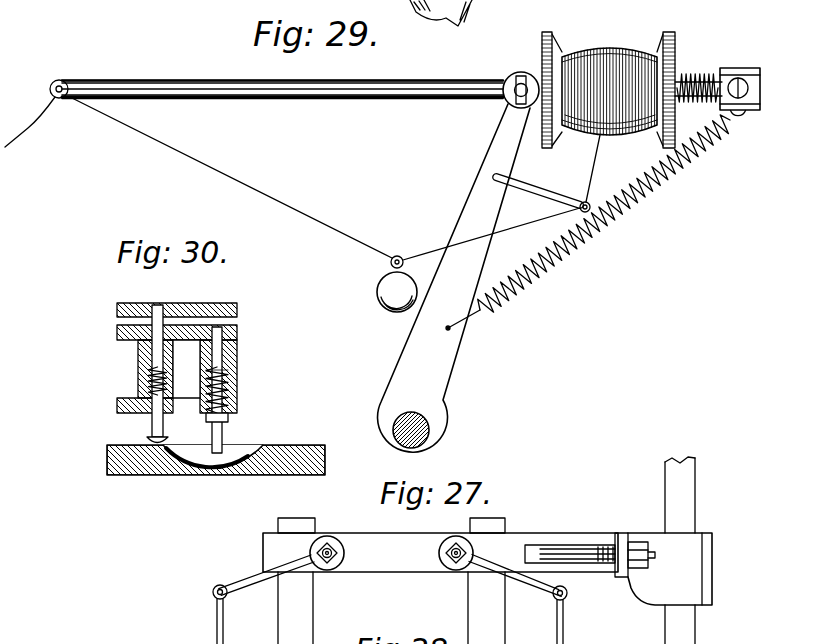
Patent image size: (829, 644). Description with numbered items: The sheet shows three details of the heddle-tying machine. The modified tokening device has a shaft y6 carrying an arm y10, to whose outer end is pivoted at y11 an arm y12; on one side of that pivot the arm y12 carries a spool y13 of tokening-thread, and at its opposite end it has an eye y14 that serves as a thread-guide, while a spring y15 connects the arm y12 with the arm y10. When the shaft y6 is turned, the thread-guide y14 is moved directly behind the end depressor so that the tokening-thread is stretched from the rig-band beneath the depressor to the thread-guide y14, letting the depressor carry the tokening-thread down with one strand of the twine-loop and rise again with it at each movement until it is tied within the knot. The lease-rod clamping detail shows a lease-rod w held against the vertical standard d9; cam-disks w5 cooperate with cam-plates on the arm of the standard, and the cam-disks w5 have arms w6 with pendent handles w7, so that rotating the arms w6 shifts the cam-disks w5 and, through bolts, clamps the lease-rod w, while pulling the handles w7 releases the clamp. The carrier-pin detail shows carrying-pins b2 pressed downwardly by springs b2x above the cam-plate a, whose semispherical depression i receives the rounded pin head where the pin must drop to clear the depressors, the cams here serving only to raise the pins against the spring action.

In FIG. 29, the shaft y6 is at (420, 427).
In FIG. 29, the arm y10 is at (453, 344).
In FIG. 29, the pivot y11 is at (510, 99).
In FIG. 29, the arm y12 is at (402, 65).
In FIG. 29, the spool of tokening-thread y13 is at (617, 60).
In FIG. 29, the eye y14 is at (85, 55).
In FIG. 29, the spring y15 is at (598, 208).
In FIG. 30, the cam-plate a is at (300, 450).
In FIG. 30, the semispherical depression i is at (198, 466).
In FIG. 30, the carrier-pin b2 is at (247, 428).
In FIG. 30, the spring b2x is at (228, 392).
In FIG. 27, the lease-rod w is at (297, 612).
In FIG. 27, the cam-disk w5 is at (338, 542).
In FIG. 27, the arm w6 is at (540, 585).
In FIG. 27, the pendent handle w7 is at (520, 594).
In FIG. 27, the vertical standard d9 is at (687, 495).